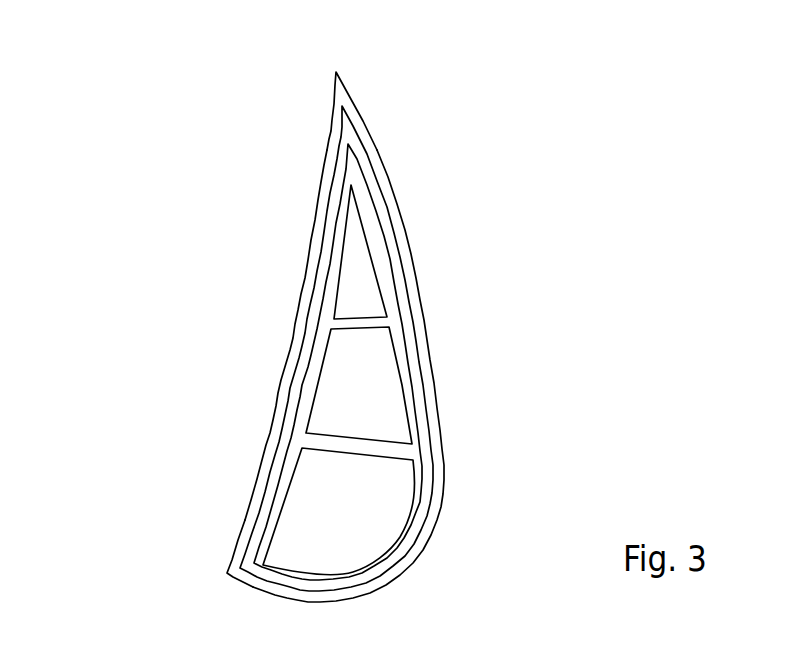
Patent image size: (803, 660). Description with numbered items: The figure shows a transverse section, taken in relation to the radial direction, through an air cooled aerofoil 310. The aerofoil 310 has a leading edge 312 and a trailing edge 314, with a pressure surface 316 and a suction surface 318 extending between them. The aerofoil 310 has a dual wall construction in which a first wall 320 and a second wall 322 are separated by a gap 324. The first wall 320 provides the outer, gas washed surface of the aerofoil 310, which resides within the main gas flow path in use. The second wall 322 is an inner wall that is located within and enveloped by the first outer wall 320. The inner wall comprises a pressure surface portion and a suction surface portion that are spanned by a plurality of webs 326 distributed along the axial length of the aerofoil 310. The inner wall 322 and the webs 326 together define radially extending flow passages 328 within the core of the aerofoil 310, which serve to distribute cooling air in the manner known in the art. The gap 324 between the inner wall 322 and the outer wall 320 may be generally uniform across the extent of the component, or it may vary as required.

The air cooled aerofoil 310 is at (475, 105).
The leading edge 312 is at (227, 573).
The trailing edge 314 is at (336, 72).
The pressure surface 316 is at (332, 148).
The suction surface 318 is at (413, 293).
The first wall 320 is at (308, 282).
The second wall 322 is at (373, 238).
The gap 324 is at (328, 238).
The webs 326 is at (322, 443).
The flow passages 328 is at (340, 537).